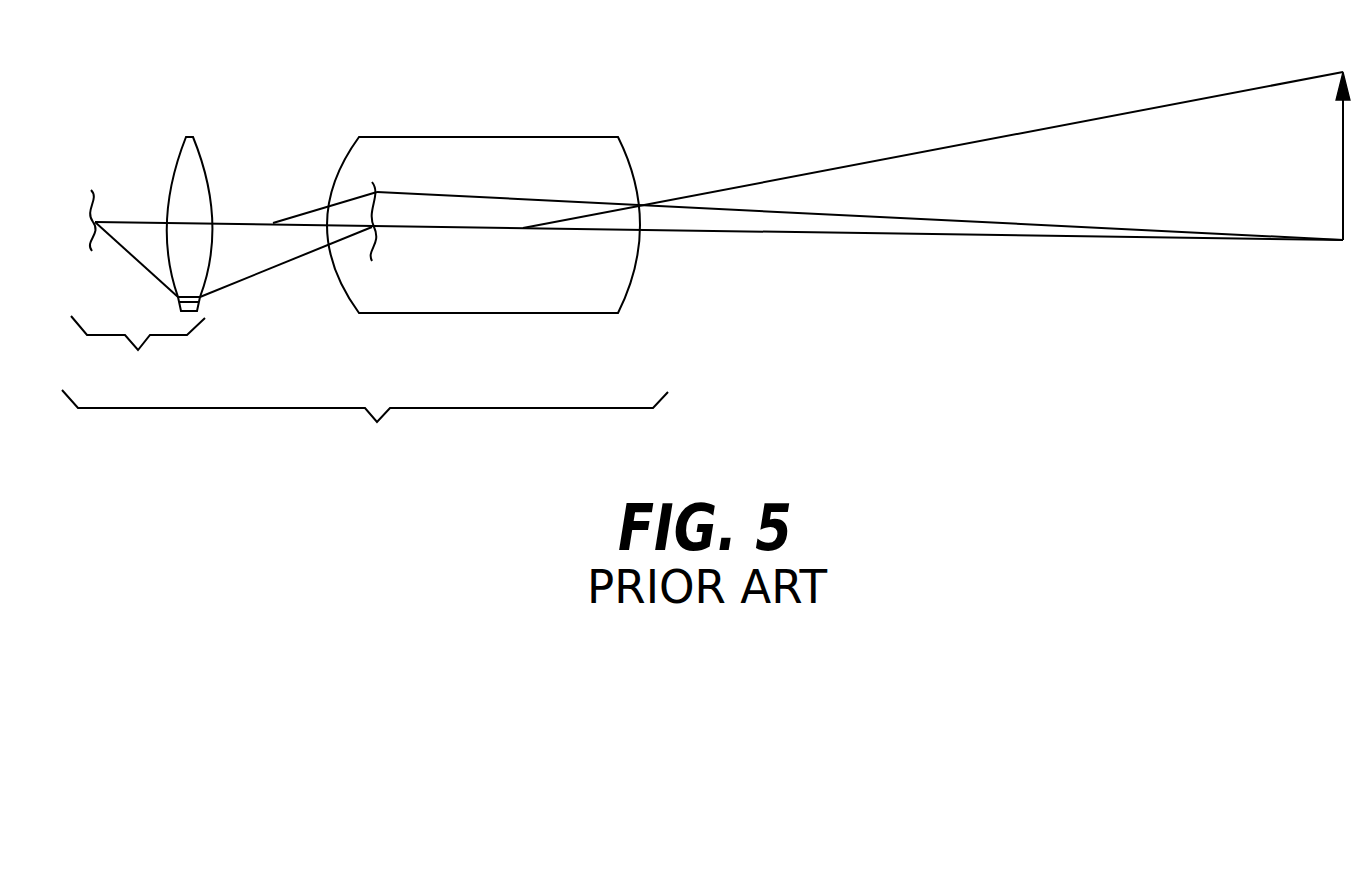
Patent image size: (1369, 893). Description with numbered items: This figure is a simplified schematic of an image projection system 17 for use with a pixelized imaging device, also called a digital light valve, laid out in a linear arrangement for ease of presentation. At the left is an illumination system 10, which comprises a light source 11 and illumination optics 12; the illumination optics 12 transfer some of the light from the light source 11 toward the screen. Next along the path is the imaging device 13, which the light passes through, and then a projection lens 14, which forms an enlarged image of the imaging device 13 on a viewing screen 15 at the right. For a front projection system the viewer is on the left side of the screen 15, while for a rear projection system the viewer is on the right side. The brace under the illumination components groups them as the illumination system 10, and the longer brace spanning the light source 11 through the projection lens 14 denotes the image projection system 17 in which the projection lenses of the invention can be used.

The illumination system 10 is at (138, 351).
The light source 11 is at (91, 201).
The illumination optics 12 is at (193, 137).
The imaging device 13 is at (273, 266).
The projection lens 14 is at (487, 150).
The viewing screen 15 is at (1342, 161).
The image projection system 17 is at (365, 426).